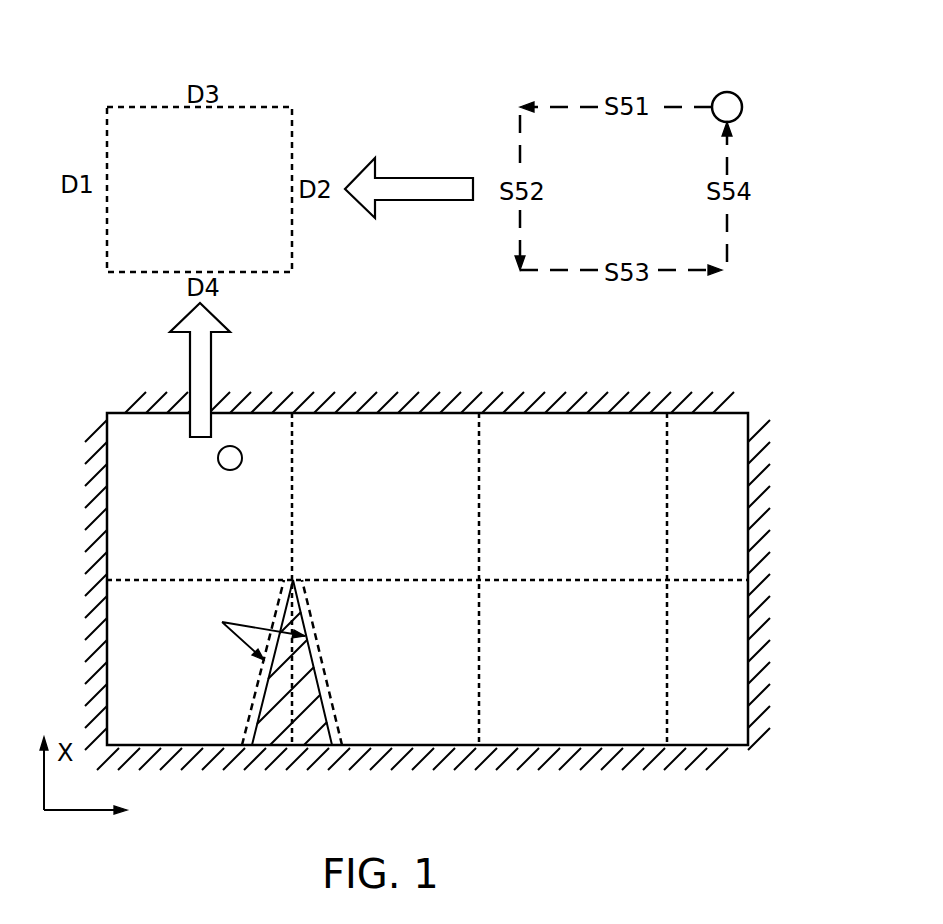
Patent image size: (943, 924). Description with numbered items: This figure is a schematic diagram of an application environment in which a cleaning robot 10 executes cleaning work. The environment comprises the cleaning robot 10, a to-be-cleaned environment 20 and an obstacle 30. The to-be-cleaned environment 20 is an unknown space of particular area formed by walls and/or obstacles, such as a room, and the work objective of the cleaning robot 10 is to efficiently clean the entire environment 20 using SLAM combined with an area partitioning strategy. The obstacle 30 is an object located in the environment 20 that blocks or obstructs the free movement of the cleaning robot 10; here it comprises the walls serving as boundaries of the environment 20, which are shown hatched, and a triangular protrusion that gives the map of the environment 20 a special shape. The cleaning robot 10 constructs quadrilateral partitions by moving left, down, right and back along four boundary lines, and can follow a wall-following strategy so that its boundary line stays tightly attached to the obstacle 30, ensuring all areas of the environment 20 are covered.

The cleaning robot 10 is at (221, 470).
The to-be-cleaned environment 20 is at (718, 742).
The obstacle 30 is at (215, 750).